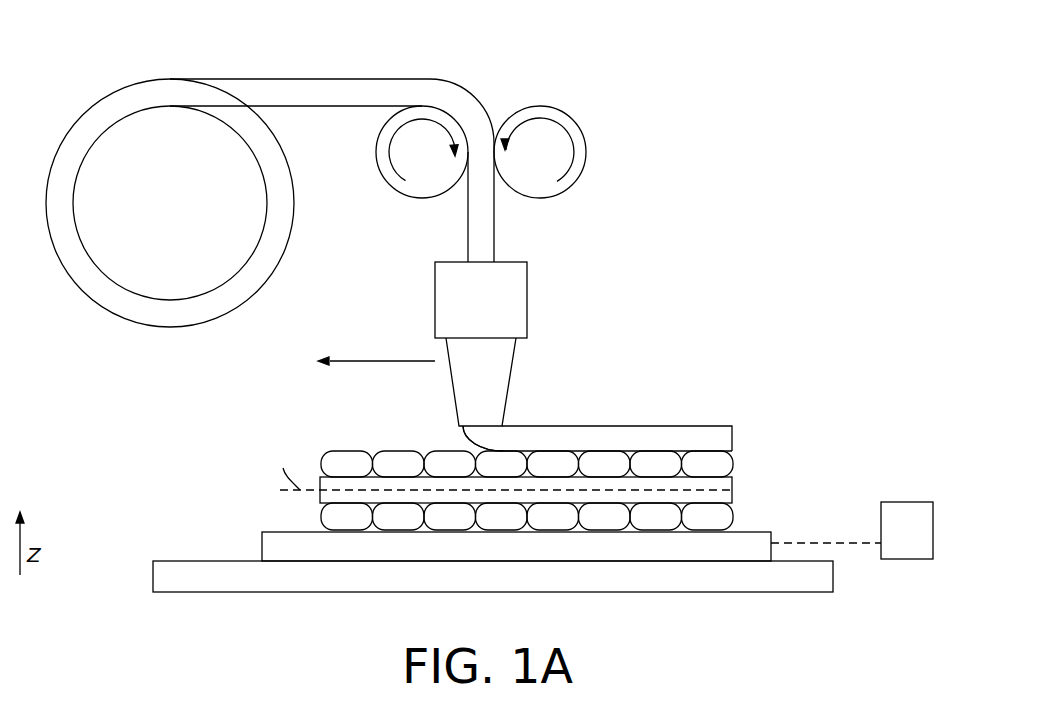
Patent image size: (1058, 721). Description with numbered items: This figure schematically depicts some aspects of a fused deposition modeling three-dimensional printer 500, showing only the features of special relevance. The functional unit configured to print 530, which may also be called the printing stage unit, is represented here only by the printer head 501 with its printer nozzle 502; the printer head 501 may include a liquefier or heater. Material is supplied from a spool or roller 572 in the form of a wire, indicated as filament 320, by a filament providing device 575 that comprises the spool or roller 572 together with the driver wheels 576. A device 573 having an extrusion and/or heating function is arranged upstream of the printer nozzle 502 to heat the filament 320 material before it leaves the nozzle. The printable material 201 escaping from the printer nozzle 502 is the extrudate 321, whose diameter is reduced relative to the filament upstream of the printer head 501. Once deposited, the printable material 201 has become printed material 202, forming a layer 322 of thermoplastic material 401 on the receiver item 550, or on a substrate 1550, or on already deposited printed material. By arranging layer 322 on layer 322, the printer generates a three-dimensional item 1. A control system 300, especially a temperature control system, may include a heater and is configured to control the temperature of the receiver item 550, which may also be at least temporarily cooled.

The 3D item 1 is at (803, 445).
The 3D printable material 201 is at (548, 419).
The 3D printed material 202 is at (702, 430).
The control system 300 is at (903, 460).
The filament 320 is at (436, 229).
The extrudate 321 is at (485, 415).
The layer 322 is at (732, 438).
The thermoplastic material 401 is at (668, 437).
The 3D printer 500 is at (770, 243).
The printer head 501 is at (513, 307).
The printer nozzle 502 is at (443, 411).
The functional unit configured to 3D print 530 is at (141, 376).
The receiver item 550 is at (231, 547).
The spool or roller 572 is at (105, 70).
The heating and/or extrusion device 573 is at (565, 230).
The filament providing device 575 is at (605, 108).
The driver wheels 576 is at (490, 72).
The substrate 1550 is at (238, 480).